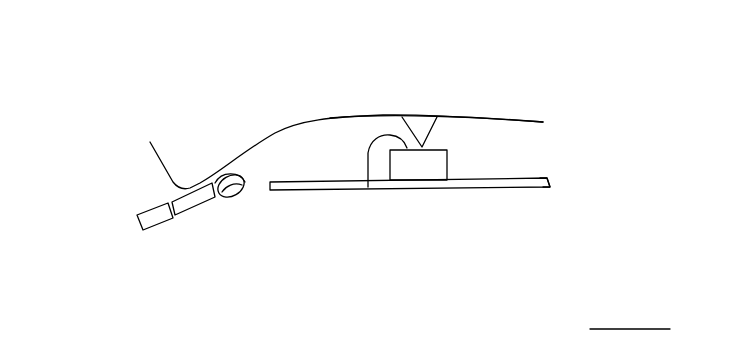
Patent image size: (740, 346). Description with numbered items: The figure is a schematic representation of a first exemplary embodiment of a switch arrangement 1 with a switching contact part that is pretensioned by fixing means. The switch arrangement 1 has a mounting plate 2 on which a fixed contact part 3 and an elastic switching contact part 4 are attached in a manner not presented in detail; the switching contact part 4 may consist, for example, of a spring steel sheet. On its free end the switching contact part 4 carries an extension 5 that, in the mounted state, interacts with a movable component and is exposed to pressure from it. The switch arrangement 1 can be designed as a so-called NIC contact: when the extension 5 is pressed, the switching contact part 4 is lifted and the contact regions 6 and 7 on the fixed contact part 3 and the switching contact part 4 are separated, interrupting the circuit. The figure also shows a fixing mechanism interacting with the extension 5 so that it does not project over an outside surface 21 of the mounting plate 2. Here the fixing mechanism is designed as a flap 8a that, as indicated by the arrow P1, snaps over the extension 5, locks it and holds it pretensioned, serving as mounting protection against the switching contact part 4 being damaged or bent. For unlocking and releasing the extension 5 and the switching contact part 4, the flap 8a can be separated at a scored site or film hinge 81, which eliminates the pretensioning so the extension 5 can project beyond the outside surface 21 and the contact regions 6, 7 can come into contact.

The switch arrangement 1 is at (187, 88).
The extension 5 is at (172, 180).
The film hinge 81 is at (174, 216).
The flap 8a is at (133, 218).
The arrow P1 is at (238, 200).
The contact region 7 is at (403, 117).
The elastic switching contact part 4 is at (463, 120).
The mounting plate 2 is at (553, 183).
The outside surface 21 is at (508, 192).
The fixed contact part 3 is at (432, 165).
The contact region 6 is at (368, 190).